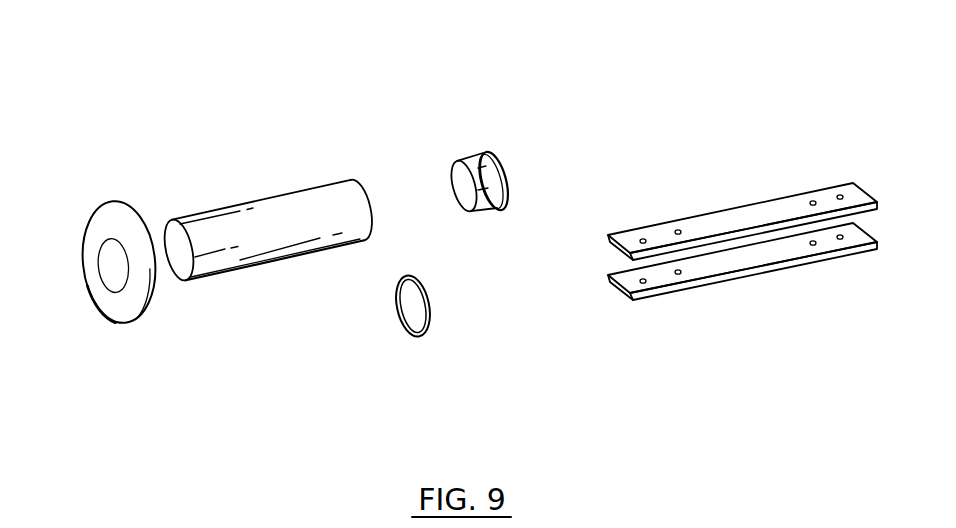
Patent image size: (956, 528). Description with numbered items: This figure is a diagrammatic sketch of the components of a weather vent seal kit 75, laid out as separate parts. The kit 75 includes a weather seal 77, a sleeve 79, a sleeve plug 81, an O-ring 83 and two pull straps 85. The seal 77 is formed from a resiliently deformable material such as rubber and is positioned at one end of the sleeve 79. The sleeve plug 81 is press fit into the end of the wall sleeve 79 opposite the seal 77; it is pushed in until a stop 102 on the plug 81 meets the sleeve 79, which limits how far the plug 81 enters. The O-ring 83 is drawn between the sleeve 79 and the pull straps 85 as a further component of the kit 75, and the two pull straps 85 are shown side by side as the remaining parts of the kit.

The weather vent seal kit 75 is at (185, 158).
The weather seal 77 is at (137, 293).
The sleeve 79 is at (298, 202).
The sleeve plug 81 is at (488, 152).
The stop 102 is at (510, 180).
The O-ring 83 is at (429, 320).
The pull straps 85 is at (610, 250).